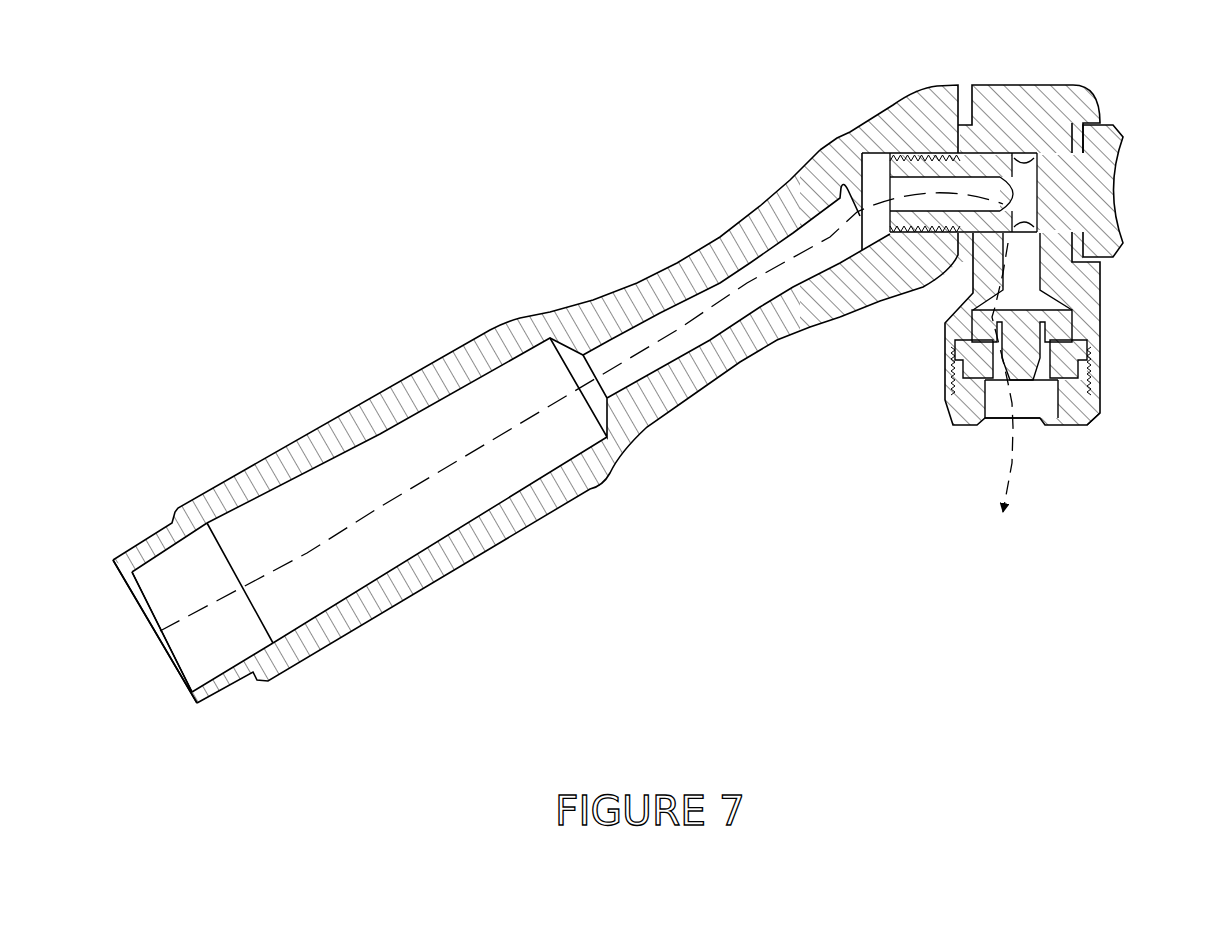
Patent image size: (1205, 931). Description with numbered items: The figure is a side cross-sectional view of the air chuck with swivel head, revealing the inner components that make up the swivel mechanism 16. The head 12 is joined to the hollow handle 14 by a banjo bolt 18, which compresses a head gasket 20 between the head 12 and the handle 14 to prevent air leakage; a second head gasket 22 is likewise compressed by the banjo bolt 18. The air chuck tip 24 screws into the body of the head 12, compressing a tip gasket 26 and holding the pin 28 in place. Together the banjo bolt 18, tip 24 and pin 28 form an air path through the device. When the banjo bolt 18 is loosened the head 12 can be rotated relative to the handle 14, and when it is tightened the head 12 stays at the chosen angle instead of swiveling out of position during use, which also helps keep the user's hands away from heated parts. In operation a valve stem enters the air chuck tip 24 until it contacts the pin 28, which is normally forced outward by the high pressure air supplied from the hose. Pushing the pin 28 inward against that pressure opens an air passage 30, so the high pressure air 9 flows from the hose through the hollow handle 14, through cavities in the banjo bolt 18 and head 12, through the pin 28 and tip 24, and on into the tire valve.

The high pressure air 9 is at (990, 389).
The head 12 is at (945, 325).
The handle 14 is at (442, 367).
The swivel mechanism 16 is at (925, 66).
The banjo bolt 18 is at (1098, 197).
The head gasket 20 is at (958, 120).
The second head gasket 22 is at (1075, 112).
The air chuck tip 24 is at (1080, 417).
The tip gasket 26 is at (1067, 362).
The pin 28 is at (1030, 317).
The air passage 30 is at (138, 633).